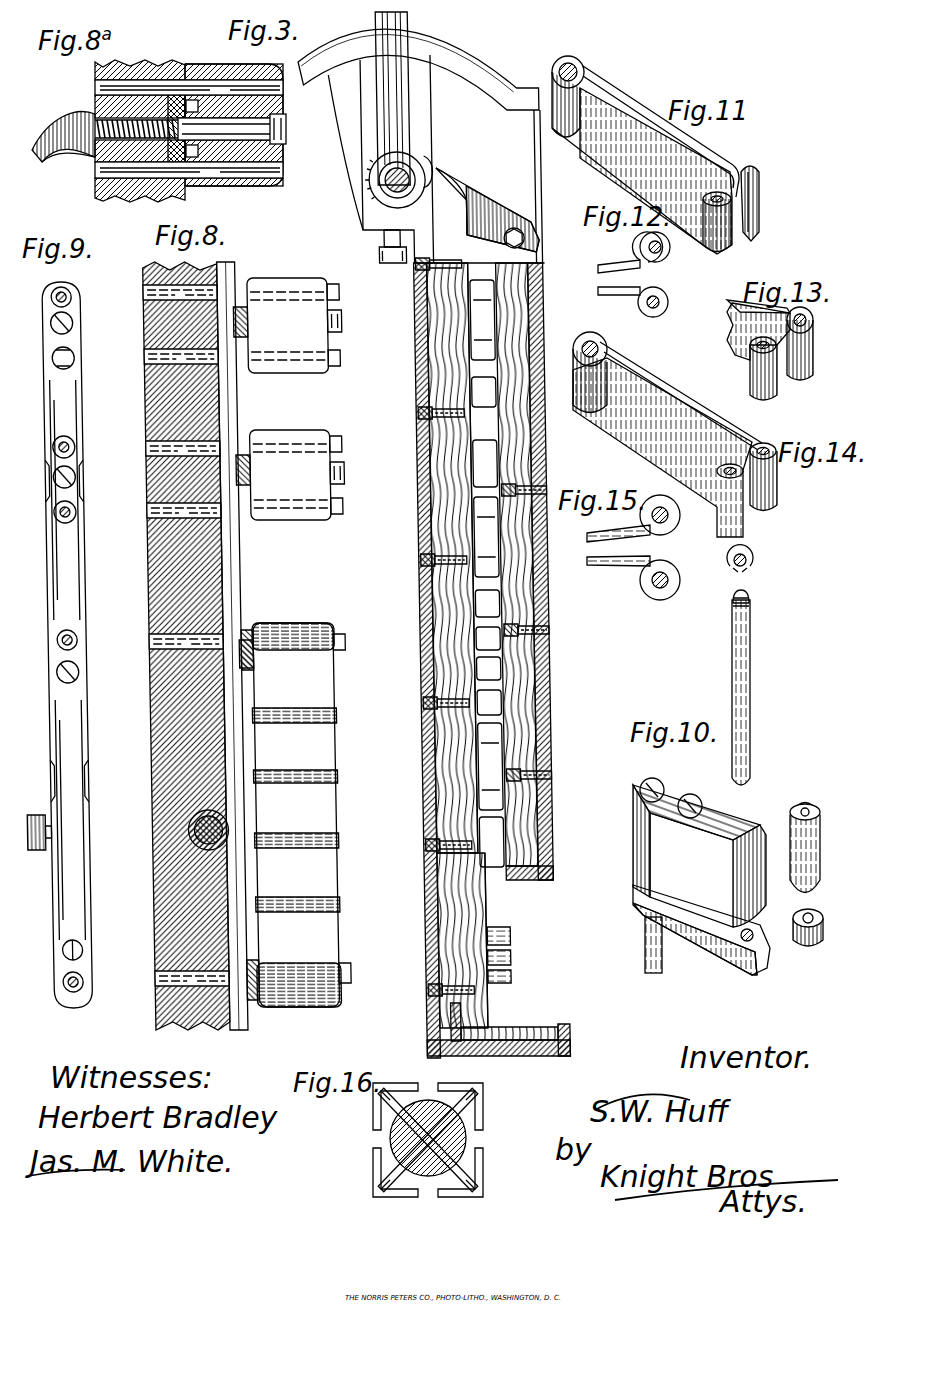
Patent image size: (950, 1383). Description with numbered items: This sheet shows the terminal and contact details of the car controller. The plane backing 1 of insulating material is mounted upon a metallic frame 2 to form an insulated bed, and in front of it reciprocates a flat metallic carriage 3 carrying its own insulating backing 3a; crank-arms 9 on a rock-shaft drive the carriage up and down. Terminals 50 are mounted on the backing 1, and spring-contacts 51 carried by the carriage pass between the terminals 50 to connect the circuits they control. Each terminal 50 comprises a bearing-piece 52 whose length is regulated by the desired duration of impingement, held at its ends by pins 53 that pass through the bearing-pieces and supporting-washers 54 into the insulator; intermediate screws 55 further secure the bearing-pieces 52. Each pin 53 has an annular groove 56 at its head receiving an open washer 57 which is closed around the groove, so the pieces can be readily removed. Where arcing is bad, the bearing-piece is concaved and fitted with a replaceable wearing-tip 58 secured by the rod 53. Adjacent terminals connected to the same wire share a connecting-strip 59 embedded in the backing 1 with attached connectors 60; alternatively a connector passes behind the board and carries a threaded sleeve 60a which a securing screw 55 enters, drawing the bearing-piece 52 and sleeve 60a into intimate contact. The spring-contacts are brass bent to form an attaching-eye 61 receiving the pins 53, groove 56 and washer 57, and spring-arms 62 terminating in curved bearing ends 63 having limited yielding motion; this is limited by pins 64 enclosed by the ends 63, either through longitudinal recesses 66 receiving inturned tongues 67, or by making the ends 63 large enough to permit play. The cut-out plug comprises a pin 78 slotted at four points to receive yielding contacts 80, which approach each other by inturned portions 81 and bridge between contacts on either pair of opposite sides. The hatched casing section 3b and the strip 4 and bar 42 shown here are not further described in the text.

In FIG. 3, the plane backing of insulating material 1 is at (433, 366).
In FIG. 8, the plane backing of insulating material 1 is at (150, 575).
In FIG. 3, the metallic frame 2 is at (464, 317).
In FIG. 3, the flat metallic carriage 3 is at (494, 660).
In FIG. 3, the insulating backing of carriage 3a is at (533, 590).
In FIG. 3, the casing wooden filling 3b is at (515, 420).
In FIG. 11, the spring strip 4 is at (656, 170).
In FIG. 13, the spring strip 4 is at (735, 306).
In FIG. 14, the spring strip 4 is at (662, 447).
In FIG. 15, the spring strip 4 is at (606, 545).
In FIG. 3, the crank-arms 9 is at (472, 215).
In FIG. 16, the cross bars 42 is at (470, 1136).
In FIG. 8A, the terminals 50 is at (236, 72).
In FIG. 8, the terminals 50 is at (345, 768).
In FIG. 3, the spring-contacts 51 is at (475, 430).
In FIG. 11, the spring-contacts 51 is at (704, 160).
In FIG. 10, the spring-contacts 51 is at (633, 830).
In FIG. 3, the bearing-piece 52 is at (470, 535).
In FIG. 8, the bearing-piece 52 is at (318, 272).
In FIG. 10, the bearing-piece 52 is at (699, 856).
In FIG. 8, the pins 53 is at (190, 296).
In FIG. 10, the pins 53 is at (751, 674).
In FIG. 8A, the bushing 54 is at (183, 78).
In FIG. 8, the bushing 54 is at (235, 285).
In FIG. 10, the bushing 54 is at (824, 938).
In FIG. 8A, the screws 55 is at (286, 128).
In FIG. 9, the screws 55 is at (70, 325).
In FIG. 8, the screws 55 is at (334, 318).
In FIG. 10, the annular groove 56 is at (750, 600).
In FIG. 14, the open washer 57 is at (660, 398).
In FIG. 15, the open washer 57 is at (754, 561).
In FIG. 10, the wearing-tip 58 is at (822, 830).
In FIG. 8A, the connecting-strip 59 is at (185, 190).
In FIG. 9, the connecting-strip 59 is at (64, 552).
In FIG. 8, the connecting-strip 59 is at (224, 578).
In FIG. 8A, the connectors 60 is at (72, 122).
In FIG. 9, the connectors 60 is at (75, 840).
In FIG. 8, the connectors 60 is at (180, 826).
In FIG. 8A, the sleeve 60a is at (95, 162).
In FIG. 11, the attaching-eye 61 is at (580, 70).
In FIG. 14, the spring-arms 62 is at (745, 448).
In FIG. 11, the curved bearing ends 63 is at (760, 171).
In FIG. 13, the curved bearing ends 63 is at (814, 318).
In FIG. 15, the pins 64 is at (668, 568).
In FIG. 12, the longitudinal recesses 66 is at (658, 290).
In FIG. 11, the inturned tongues 67 is at (752, 164).
In FIG. 16, the pin 78 is at (434, 1176).
In FIG. 16, the yielding contacts 80 is at (478, 1090).
In FIG. 16, the inturned portions 81 is at (434, 1090).